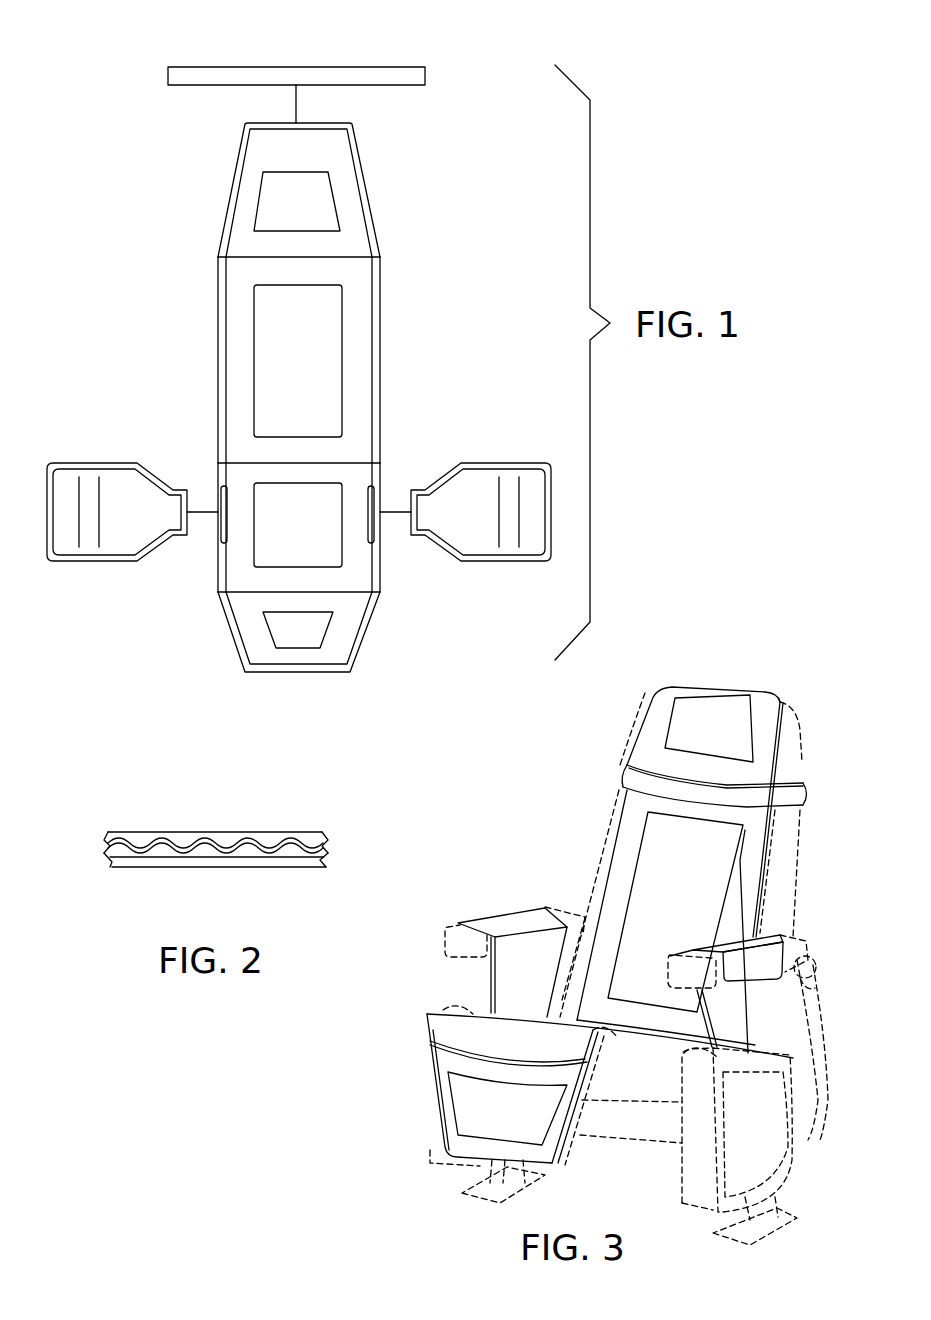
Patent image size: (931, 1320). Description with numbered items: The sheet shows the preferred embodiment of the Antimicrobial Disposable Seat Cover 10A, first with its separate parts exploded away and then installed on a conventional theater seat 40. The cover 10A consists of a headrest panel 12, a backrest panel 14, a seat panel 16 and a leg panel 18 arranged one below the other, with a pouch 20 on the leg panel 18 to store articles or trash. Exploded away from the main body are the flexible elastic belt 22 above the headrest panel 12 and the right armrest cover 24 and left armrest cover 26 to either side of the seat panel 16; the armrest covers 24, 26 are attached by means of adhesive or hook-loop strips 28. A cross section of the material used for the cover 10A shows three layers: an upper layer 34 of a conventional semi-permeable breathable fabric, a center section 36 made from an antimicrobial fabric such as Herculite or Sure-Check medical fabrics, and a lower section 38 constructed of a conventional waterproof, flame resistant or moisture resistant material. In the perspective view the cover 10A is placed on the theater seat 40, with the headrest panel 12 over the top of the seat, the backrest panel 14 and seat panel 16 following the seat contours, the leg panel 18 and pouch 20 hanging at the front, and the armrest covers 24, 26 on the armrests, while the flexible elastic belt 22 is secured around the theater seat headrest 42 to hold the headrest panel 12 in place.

In FIG. 1, the Antimicrobial Disposable Seat Cover 10A is at (137, 185).
In FIG. 1, the headrest panel 12 is at (315, 205).
In FIG. 3, the headrest panel 12 is at (678, 718).
In FIG. 1, the backrest panel 14 is at (240, 336).
In FIG. 3, the backrest panel 14 is at (650, 892).
In FIG. 1, the seat panel 16 is at (243, 572).
In FIG. 3, the seat panel 16 is at (522, 1015).
In FIG. 1, the leg panel 18 is at (306, 642).
In FIG. 3, the leg panel 18 is at (467, 1098).
In FIG. 1, the pouch 20 is at (335, 590).
In FIG. 3, the pouch 20 is at (490, 1055).
In FIG. 1, the flexible elastic belt 22 is at (263, 65).
In FIG. 3, the flexible elastic belt 22 is at (655, 787).
In FIG. 1, the right armrest cover 24 is at (115, 490).
In FIG. 3, the right armrest cover 24 is at (510, 918).
In FIG. 1, the left armrest cover 26 is at (485, 490).
In FIG. 3, the left armrest cover 26 is at (752, 935).
In FIG. 1, the hook-loop strips 28 is at (372, 497).
In FIG. 2, the upper layer 34 is at (153, 832).
In FIG. 2, the center section 36 is at (218, 840).
In FIG. 2, the lower section 38 is at (280, 858).
In FIG. 3, the theater seat 40 is at (755, 1140).
In FIG. 3, the theater seat headrest 42 is at (798, 733).